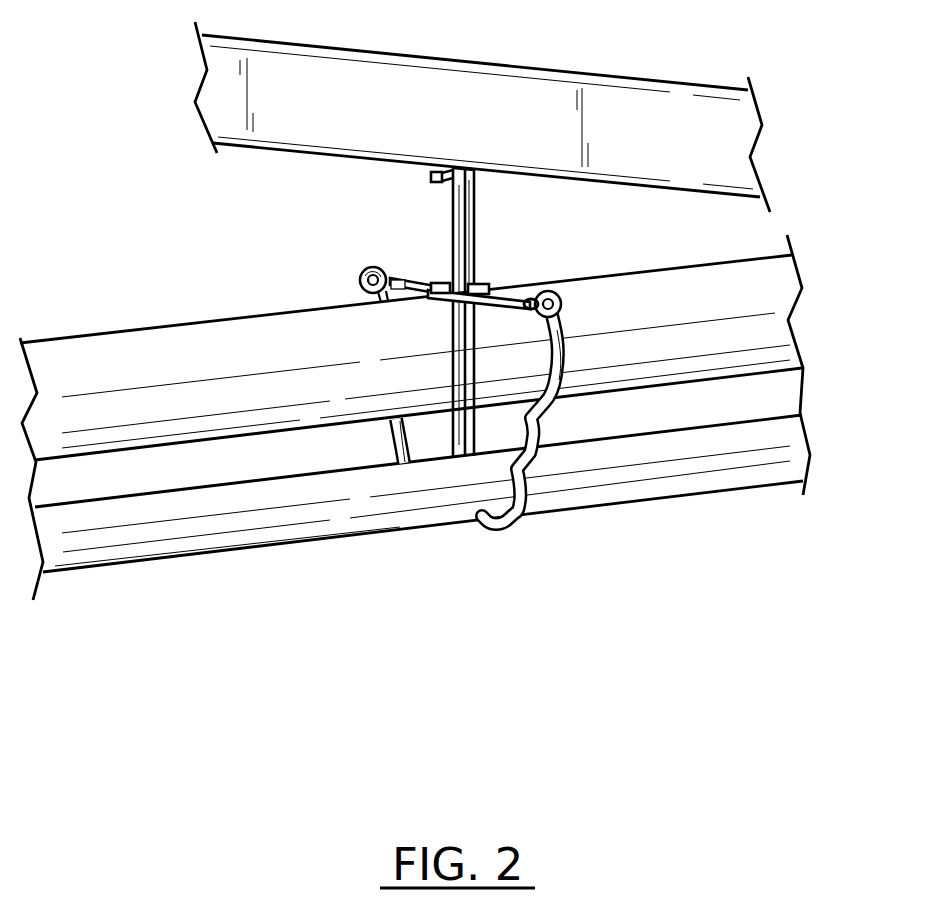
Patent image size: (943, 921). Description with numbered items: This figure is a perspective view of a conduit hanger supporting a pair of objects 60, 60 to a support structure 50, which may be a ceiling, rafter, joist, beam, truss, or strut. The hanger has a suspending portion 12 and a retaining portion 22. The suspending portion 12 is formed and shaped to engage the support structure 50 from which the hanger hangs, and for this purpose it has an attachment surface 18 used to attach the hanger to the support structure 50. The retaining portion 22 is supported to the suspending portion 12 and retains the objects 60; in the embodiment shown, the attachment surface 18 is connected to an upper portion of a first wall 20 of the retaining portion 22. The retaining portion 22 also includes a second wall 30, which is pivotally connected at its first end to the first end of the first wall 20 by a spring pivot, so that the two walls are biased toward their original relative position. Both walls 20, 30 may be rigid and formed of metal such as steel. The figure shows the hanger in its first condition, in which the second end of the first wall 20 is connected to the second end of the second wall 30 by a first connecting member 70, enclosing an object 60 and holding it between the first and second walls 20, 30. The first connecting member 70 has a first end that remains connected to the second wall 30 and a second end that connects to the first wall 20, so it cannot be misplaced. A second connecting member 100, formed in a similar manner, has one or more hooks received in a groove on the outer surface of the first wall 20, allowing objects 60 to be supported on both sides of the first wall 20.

The suspending portion 12 is at (346, 173).
The attachment surface 18 is at (440, 184).
The first wall 20 is at (476, 210).
The retaining portion 22 is at (444, 412).
The second wall 30 is at (556, 338).
The support structure 50 is at (258, 150).
The object 60 is at (747, 376).
The first connecting member 70 is at (503, 288).
The second connecting member 100 is at (432, 279).